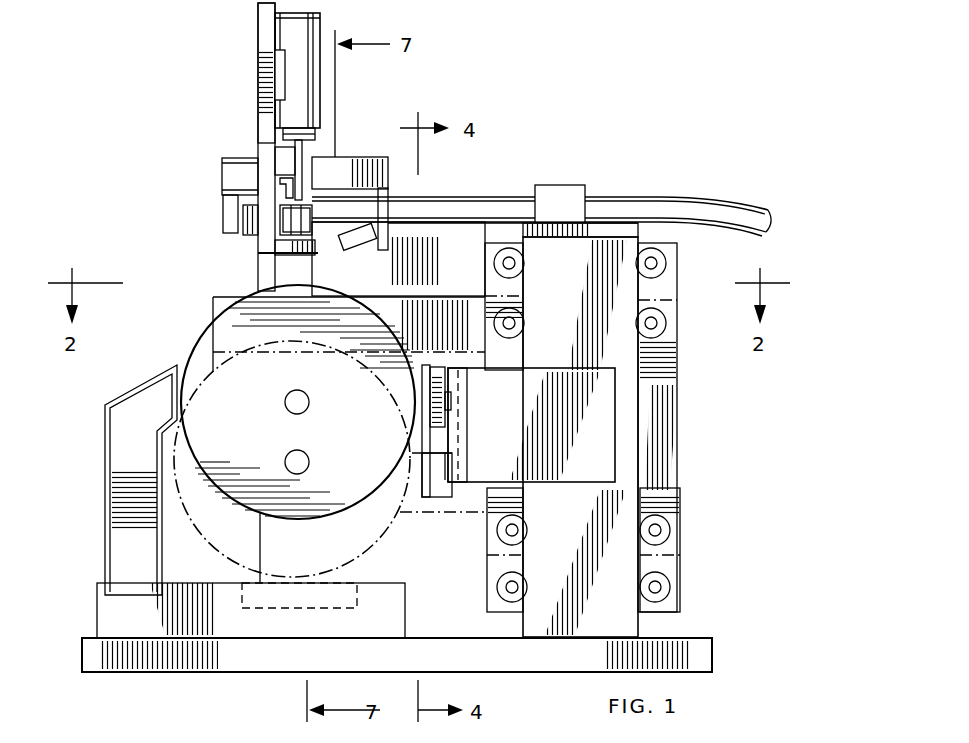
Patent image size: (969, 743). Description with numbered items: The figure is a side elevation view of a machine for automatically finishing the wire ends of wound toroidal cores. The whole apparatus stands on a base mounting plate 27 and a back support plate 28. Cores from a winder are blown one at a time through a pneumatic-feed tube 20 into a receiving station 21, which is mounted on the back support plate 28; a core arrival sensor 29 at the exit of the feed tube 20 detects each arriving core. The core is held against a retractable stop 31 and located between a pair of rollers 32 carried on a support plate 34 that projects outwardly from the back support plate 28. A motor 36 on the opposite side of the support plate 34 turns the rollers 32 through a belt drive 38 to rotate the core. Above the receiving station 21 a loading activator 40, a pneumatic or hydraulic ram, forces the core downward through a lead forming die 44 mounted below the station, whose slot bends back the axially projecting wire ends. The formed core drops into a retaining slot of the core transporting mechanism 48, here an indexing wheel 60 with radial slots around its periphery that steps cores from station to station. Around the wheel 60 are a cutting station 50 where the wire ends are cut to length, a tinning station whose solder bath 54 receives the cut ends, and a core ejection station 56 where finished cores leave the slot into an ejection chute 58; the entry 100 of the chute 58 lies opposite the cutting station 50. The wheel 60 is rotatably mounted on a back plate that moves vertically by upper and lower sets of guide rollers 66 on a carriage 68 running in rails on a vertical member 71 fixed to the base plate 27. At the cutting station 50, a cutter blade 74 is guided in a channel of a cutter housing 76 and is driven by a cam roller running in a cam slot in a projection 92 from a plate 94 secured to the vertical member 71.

The pneumatic-feed tube 20 is at (625, 205).
The receiving station 21 is at (320, 185).
The base mounting plate 27 is at (187, 668).
The back support plate 28 is at (262, 288).
The core arrival sensor 29 is at (354, 247).
The retractable stop 31 is at (283, 190).
The rollers 32 is at (283, 232).
The support plate 34 is at (258, 15).
The motor 36 is at (232, 158).
The belt drive 38 is at (243, 222).
The loading activator 40 is at (302, 147).
The lead forming die 44 is at (306, 255).
The core transporting mechanism 48 is at (176, 352).
The cutting station 50 is at (410, 402).
The solder bath 54 is at (268, 609).
The core ejection station 56 is at (192, 399).
The ejection chute 58 is at (108, 478).
The indexing wheel 60 is at (232, 332).
The guide rollers 66 is at (660, 260).
The carriage 68 is at (678, 405).
The vertical member 71 is at (642, 470).
The cutter blade 74 is at (437, 372).
The cutter housing 76 is at (412, 429).
The projection 92 is at (466, 453).
The plate 94 is at (584, 477).
The entry of core ejection chute 100 is at (160, 388).